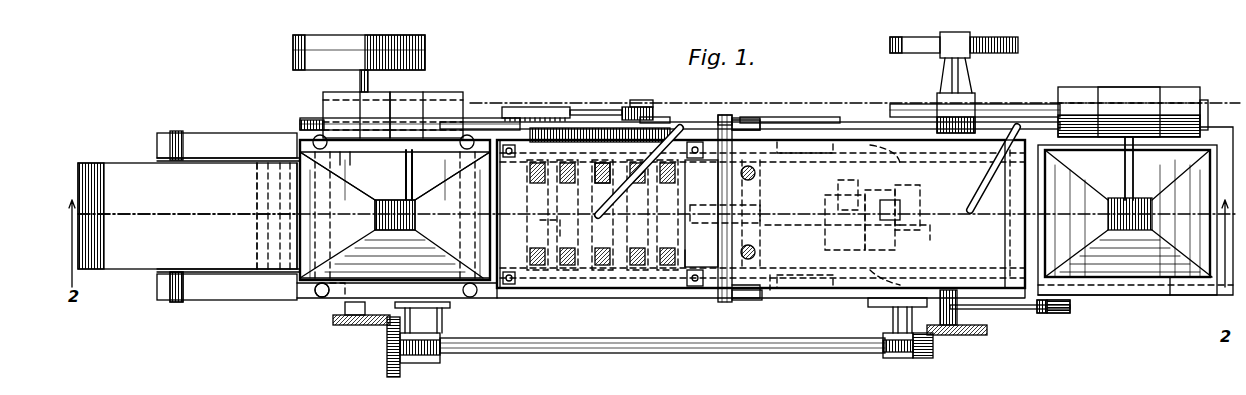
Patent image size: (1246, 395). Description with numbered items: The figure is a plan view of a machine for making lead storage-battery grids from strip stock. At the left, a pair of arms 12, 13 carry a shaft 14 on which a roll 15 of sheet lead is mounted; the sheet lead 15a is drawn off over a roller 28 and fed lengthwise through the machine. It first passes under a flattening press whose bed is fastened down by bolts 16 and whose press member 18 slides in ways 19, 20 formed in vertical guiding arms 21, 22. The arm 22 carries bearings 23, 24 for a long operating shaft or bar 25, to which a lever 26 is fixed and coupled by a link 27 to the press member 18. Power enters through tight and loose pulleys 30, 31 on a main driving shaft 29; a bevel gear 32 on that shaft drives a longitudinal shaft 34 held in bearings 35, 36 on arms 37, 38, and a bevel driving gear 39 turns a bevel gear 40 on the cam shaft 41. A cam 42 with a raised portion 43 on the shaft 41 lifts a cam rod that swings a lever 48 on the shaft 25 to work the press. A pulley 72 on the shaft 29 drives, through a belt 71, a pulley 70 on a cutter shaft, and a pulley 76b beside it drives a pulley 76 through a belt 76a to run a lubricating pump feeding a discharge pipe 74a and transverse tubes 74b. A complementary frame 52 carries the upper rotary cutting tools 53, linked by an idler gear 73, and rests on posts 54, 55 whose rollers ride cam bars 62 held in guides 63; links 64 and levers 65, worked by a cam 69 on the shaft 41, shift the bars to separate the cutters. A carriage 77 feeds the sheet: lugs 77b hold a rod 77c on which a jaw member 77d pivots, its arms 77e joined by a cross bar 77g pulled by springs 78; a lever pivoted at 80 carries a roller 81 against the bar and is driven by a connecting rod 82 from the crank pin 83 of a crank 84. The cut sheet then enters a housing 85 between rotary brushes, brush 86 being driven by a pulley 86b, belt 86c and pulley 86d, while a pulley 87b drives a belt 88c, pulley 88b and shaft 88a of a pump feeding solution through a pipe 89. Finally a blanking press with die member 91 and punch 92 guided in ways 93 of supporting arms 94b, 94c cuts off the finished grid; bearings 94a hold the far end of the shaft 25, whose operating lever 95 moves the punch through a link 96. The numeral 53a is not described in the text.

The arm 12 is at (236, 301).
The arm 13 is at (233, 136).
The shaft 14 is at (176, 301).
The roll 15 is at (115, 270).
The sheet lead 15a is at (187, 213).
The bolts 16 is at (318, 295).
The press member 18 is at (395, 210).
The way 19 is at (390, 330).
The way 20 is at (350, 158).
The vertical guiding arm 21 is at (340, 300).
The vertical guiding arm 22 is at (342, 170).
The bearing 23 is at (340, 93).
The bearing 24 is at (441, 93).
The operating shaft or bar 25 is at (481, 120).
The arm or lever 26 is at (410, 172).
The link 27 is at (378, 218).
The roller 28 is at (257, 270).
The main driving shaft 29 is at (369, 84).
The tight pulley 30 is at (425, 60).
The loose pulley 31 is at (425, 42).
The bevel gear 32 is at (352, 326).
The longitudinally extending shaft 34 is at (500, 353).
The bearing 35 is at (425, 363).
The bearing 36 is at (895, 358).
The arm 37 is at (445, 320).
The arm 38 is at (885, 308).
The bevel driving gear 39 is at (925, 360).
The bevel gear 40 is at (965, 336).
The shaft 41 is at (905, 250).
The cam 42 is at (1018, 45).
The raised portion 43 is at (968, 36).
The lever 48 is at (960, 78).
The complementary frame member 52 is at (632, 290).
The rotary cutting tools 53 is at (582, 268).
The carriage member 53a is at (600, 180).
The supporting post 54 is at (513, 160).
The supporting post 55 is at (695, 160).
The cam bar 62 is at (805, 140).
The guide 63 is at (772, 290).
The link 64 is at (845, 222).
The lever 65 is at (881, 212).
The cam 69 is at (870, 145).
The driving pulley 70 is at (545, 110).
The belt 71 is at (300, 124).
The pulley 72 is at (312, 118).
The intermediate idler gear 73 is at (556, 160).
The discharge pipe 74a is at (650, 195).
The transversely extending tubes 74b is at (540, 225).
The pulley 76 is at (640, 100).
The belt 76a is at (605, 110).
The pulley 76b is at (515, 107).
The carriage 77 is at (739, 208).
The laterally projecting lugs 77b is at (722, 115).
The rod 77c is at (735, 340).
The jaw member 77d is at (685, 258).
The arms 77e is at (740, 118).
The cross bar 77g is at (758, 173).
The springs 78 is at (758, 252).
The pivot 80 is at (722, 213).
The roller 81 is at (760, 205).
The connecting rod 82 is at (805, 222).
The crank pin 83 is at (848, 190).
The crank 84 is at (896, 222).
The housing 85 is at (900, 200).
The rotary brush 86 is at (1005, 222).
The pulley 86b is at (985, 105).
The belt 86c is at (792, 117).
The pulley 86d is at (660, 118).
The pulley 87b is at (988, 318).
The shaft 88a is at (1072, 306).
The pulley 88b is at (1065, 315).
The belt 88c is at (1038, 315).
The pipe 89 is at (988, 185).
The die member 91 is at (1210, 296).
The punch 92 is at (1190, 152).
The ways 93 is at (1080, 160).
The bearings 94a is at (1080, 87).
The supporting arm 94b is at (1175, 296).
The supporting arm 94c is at (1200, 125).
The operating lever 95 is at (1135, 87).
The link 96 is at (1106, 205).